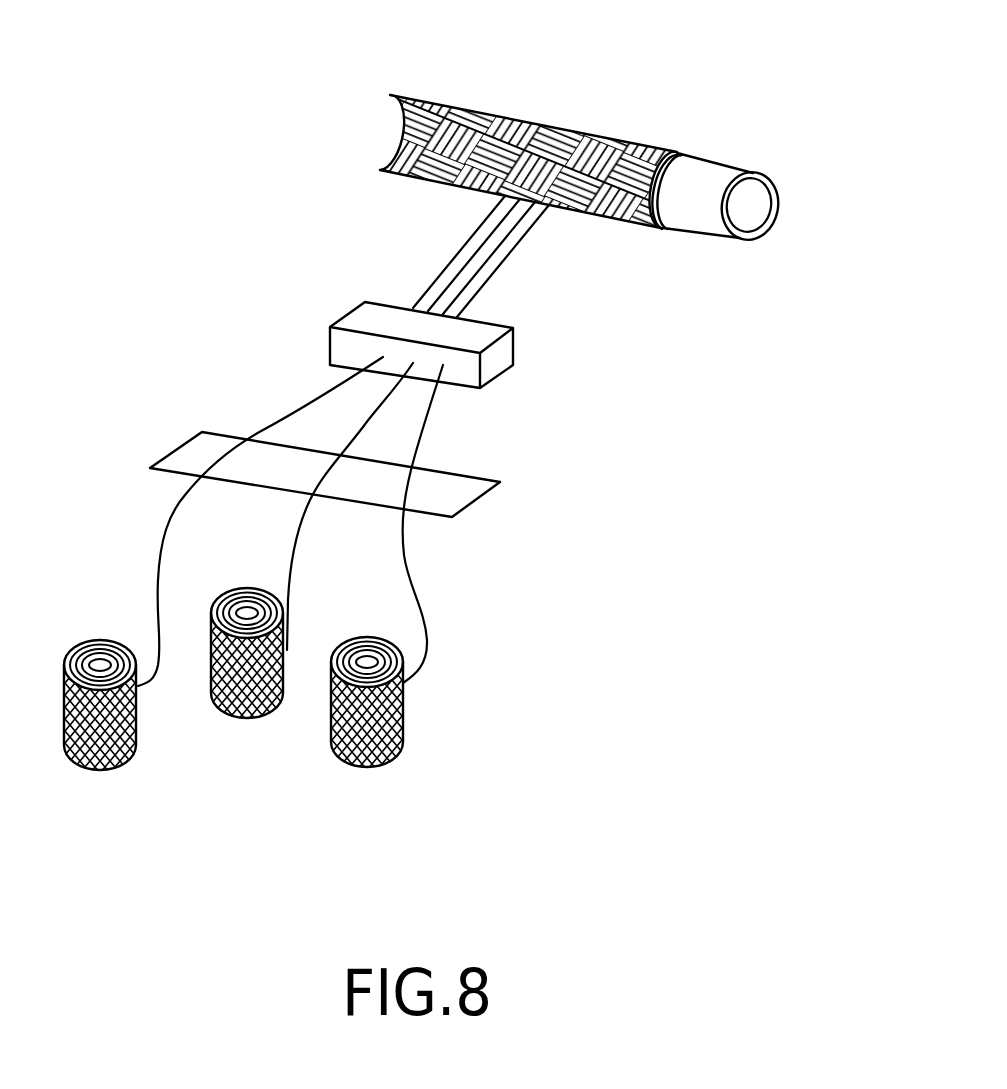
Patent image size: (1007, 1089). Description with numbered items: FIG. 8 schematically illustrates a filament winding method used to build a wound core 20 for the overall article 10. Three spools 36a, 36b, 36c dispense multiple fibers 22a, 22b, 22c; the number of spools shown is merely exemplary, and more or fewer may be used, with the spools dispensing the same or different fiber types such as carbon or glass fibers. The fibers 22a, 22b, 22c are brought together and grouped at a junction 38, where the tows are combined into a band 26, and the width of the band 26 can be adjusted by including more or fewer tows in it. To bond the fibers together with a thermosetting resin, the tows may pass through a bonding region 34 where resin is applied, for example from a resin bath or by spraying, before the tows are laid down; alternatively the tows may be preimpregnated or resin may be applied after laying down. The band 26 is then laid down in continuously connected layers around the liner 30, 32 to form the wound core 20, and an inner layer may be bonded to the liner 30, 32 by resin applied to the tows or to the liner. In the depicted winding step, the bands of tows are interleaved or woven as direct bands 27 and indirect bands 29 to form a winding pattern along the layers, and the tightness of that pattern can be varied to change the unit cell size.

The sensor assembly 10 is at (313, 140).
The wound core 20 is at (455, 115).
The indirect band 29 is at (576, 132).
The liner 30 is at (771, 164).
The liner 32 is at (721, 157).
The direct band 27 is at (678, 216).
The band 26 is at (497, 263).
The junction 38 is at (500, 363).
The bonding region 34 is at (460, 497).
The fiber 22a is at (157, 522).
The fiber 22b is at (293, 530).
The fiber 22c is at (423, 627).
The spool 36a is at (100, 770).
The spool 36b is at (250, 717).
The spool 36c is at (403, 740).